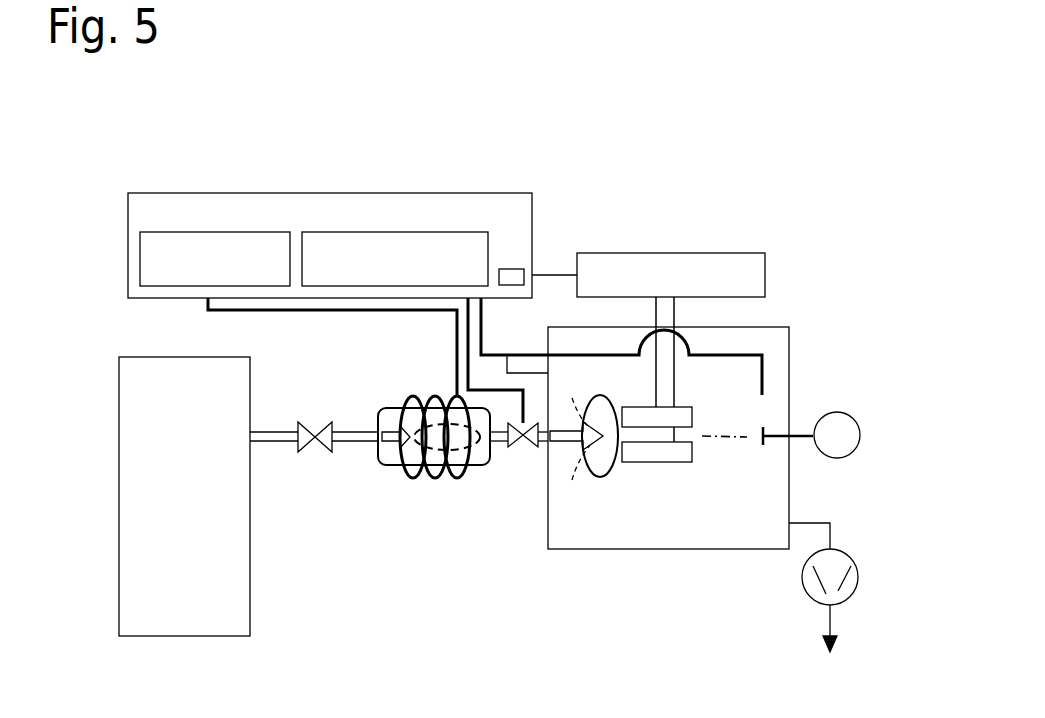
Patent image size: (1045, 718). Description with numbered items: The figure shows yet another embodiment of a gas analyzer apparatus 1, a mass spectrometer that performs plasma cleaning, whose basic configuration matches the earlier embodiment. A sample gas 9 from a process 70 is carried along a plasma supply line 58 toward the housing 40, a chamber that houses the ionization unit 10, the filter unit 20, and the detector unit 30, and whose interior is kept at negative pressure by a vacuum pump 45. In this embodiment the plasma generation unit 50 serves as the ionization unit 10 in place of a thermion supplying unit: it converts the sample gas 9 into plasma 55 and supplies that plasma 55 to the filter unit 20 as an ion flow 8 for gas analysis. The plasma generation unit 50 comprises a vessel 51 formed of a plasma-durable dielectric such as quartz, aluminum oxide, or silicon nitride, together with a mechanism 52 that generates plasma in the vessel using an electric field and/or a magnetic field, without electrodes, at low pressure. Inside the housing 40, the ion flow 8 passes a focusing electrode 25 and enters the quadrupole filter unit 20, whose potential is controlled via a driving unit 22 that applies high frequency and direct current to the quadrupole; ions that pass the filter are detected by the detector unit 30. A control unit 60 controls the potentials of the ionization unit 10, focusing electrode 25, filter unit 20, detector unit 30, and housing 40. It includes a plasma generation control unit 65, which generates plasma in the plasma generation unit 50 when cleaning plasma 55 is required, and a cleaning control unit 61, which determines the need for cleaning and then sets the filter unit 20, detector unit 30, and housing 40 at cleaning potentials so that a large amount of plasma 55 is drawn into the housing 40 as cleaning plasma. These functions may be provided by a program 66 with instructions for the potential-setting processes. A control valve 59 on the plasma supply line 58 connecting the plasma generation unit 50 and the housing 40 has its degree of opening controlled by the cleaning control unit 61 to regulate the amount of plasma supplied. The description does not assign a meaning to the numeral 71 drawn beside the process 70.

The gas analyzer apparatus 1 is at (800, 280).
The ion flow 8 is at (567, 440).
The sample gas 9 is at (390, 443).
The ionization unit 10 is at (446, 484).
The filter unit 20 is at (670, 478).
The driving unit 22 is at (742, 270).
The focusing electrode 25 is at (600, 477).
The detector unit 30 is at (753, 466).
The housing 40 is at (792, 326).
The vacuum pump 45 is at (860, 578).
The plasma generation unit 50 is at (392, 386).
The vessel 51 is at (380, 408).
The mechanism for generating plasma 52 is at (433, 397).
The plasma 55 is at (412, 443).
The plasma supply line 58 is at (497, 444).
The control valve 59 is at (517, 460).
The control unit 60 is at (495, 210).
The cleaning control unit 61 is at (455, 243).
The plasma generation control unit 65 is at (154, 243).
The program 66 is at (516, 274).
The process 70 is at (116, 337).
The process chamber 71 is at (119, 405).